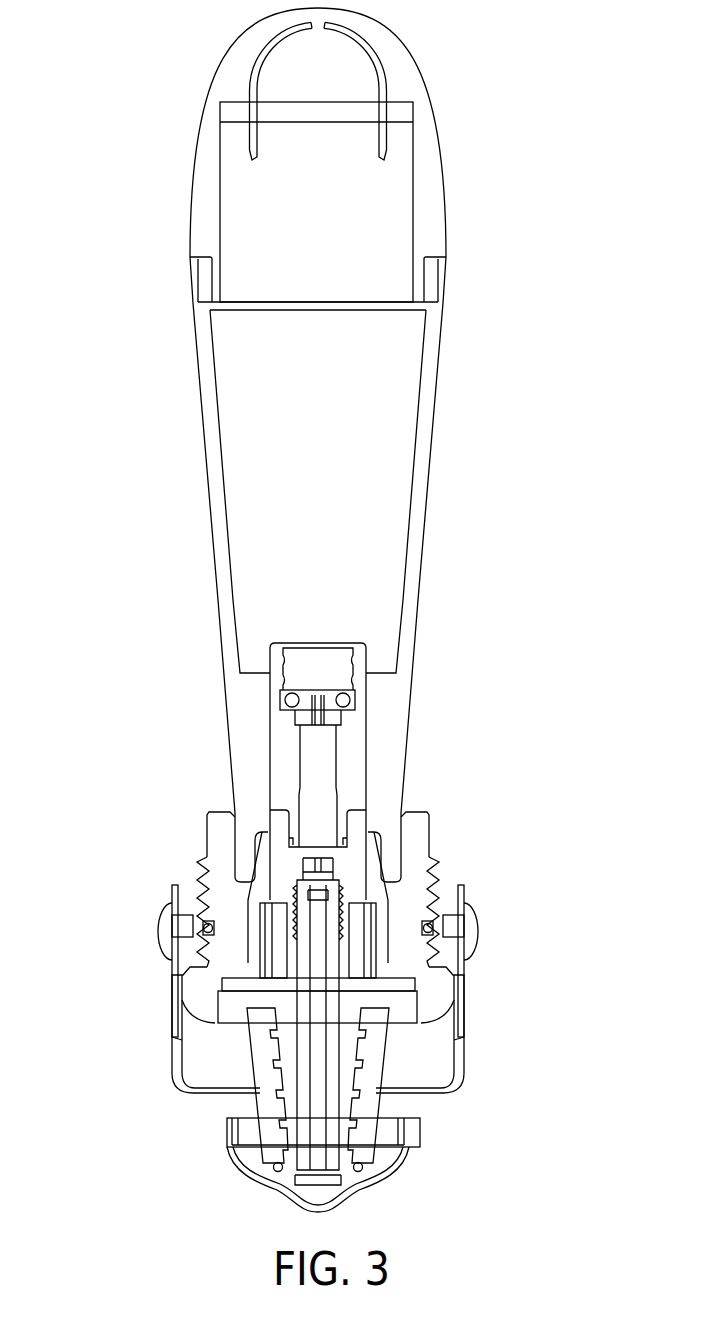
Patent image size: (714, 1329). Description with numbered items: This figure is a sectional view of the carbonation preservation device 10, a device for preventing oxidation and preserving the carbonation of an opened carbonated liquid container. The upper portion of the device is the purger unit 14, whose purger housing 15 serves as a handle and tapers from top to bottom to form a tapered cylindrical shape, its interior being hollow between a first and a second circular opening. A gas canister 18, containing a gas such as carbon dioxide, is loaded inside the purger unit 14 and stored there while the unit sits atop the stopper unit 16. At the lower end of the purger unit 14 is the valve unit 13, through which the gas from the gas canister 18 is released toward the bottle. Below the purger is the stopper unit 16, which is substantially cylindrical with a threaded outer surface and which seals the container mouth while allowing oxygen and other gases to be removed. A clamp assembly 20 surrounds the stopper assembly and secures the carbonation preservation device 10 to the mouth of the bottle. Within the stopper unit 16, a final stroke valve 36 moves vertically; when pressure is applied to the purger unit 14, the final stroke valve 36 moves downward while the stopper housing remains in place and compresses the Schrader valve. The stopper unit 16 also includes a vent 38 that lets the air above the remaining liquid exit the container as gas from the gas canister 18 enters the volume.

The carbonation preservation device 10 is at (590, 166).
The purger unit 14 is at (92, 8).
The purger housing 15 is at (442, 367).
The gas canister 18 is at (335, 208).
The valve unit 13 is at (382, 740).
The stopper unit 16 is at (578, 800).
The clamp assembly 20 is at (418, 1067).
The vent 38 is at (350, 1033).
The final stroke valve 36 is at (317, 1105).